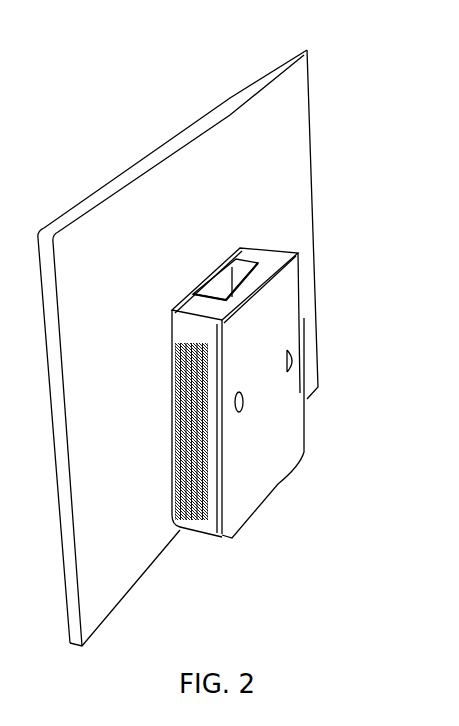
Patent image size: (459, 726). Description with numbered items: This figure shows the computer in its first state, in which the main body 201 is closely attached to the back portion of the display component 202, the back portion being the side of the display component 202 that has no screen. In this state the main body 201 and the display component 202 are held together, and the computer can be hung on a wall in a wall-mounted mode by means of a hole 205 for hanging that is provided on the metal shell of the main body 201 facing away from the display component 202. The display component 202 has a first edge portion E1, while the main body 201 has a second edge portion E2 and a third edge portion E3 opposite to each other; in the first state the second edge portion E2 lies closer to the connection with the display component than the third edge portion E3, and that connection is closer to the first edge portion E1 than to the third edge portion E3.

The display component 202 is at (299, 50).
The main body 201 is at (283, 244).
The hole for hanging 205 is at (283, 352).
The first edge portion E1 is at (150, 572).
The second edge portion E2 is at (273, 486).
The third edge portion E3 is at (273, 270).